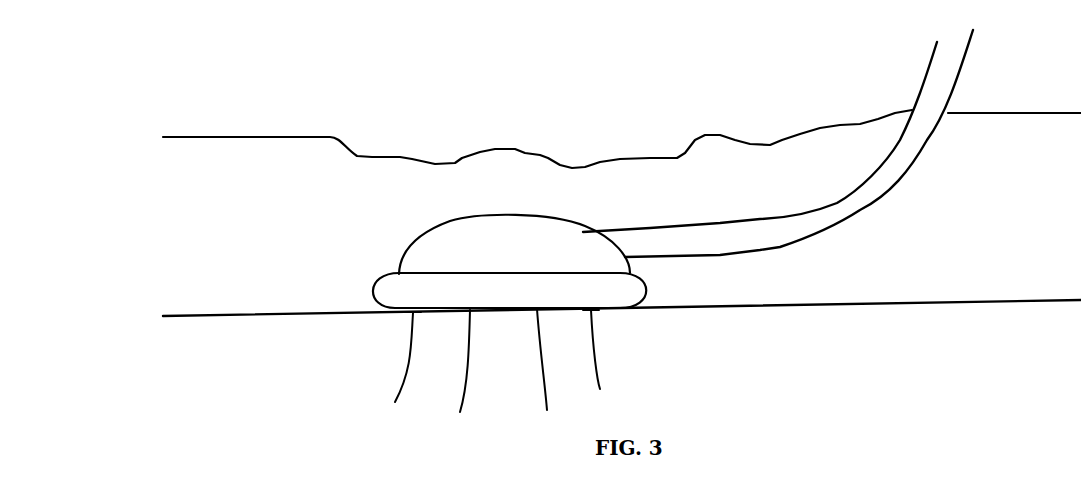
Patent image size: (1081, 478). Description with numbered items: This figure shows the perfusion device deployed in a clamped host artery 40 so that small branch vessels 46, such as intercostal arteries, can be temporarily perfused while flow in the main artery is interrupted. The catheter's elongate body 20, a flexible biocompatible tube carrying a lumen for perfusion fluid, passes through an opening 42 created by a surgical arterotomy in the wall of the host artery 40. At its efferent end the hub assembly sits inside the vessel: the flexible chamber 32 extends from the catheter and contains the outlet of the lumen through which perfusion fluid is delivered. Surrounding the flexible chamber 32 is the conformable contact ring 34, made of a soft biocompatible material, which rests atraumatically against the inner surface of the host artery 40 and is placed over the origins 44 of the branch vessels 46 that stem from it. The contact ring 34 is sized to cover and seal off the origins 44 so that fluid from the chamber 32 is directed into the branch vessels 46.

The elongate body 20 is at (838, 228).
The flexible chamber 32 is at (428, 237).
The conformable contact ring 34 is at (377, 288).
The host artery 40 is at (216, 155).
The opening 42 is at (443, 150).
The origin 44 is at (413, 313).
The branch vessel 46 is at (430, 373).